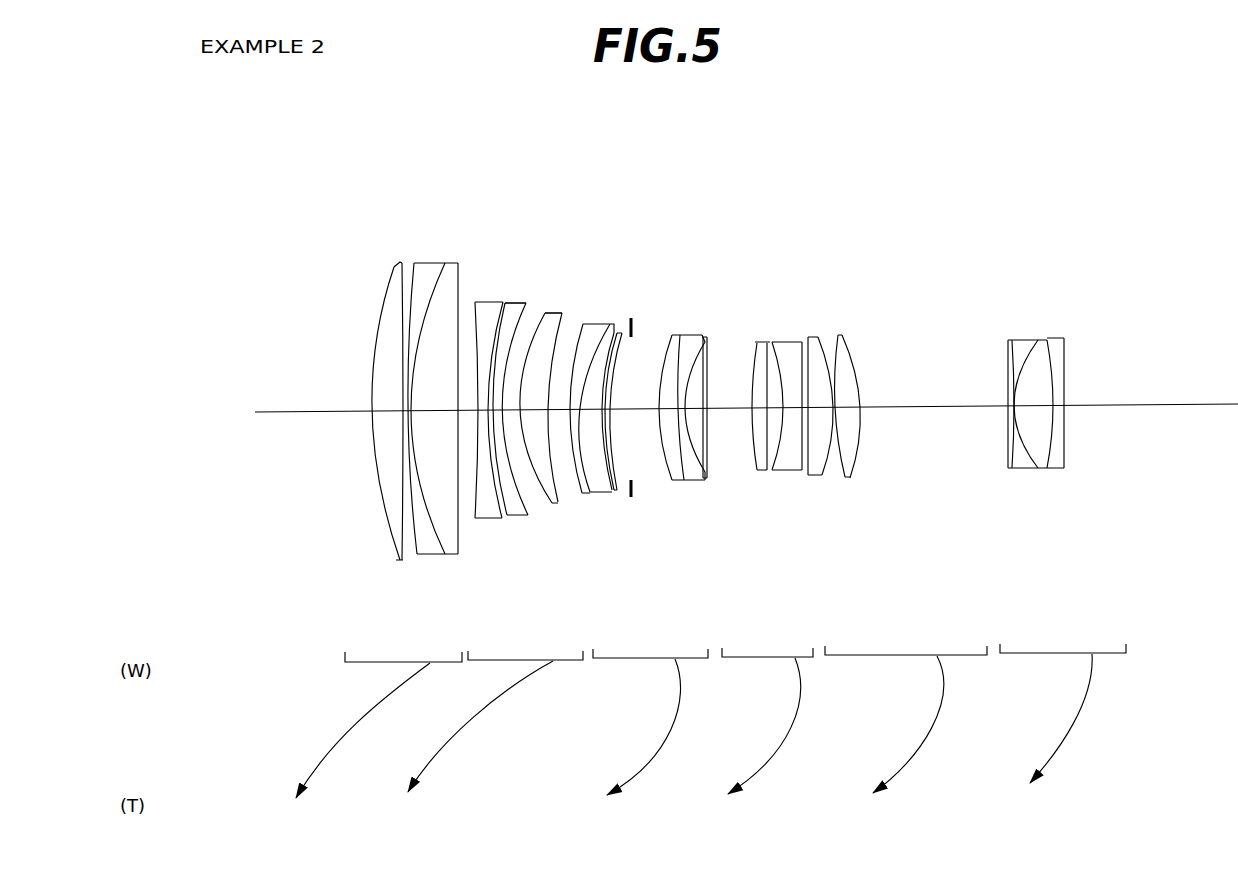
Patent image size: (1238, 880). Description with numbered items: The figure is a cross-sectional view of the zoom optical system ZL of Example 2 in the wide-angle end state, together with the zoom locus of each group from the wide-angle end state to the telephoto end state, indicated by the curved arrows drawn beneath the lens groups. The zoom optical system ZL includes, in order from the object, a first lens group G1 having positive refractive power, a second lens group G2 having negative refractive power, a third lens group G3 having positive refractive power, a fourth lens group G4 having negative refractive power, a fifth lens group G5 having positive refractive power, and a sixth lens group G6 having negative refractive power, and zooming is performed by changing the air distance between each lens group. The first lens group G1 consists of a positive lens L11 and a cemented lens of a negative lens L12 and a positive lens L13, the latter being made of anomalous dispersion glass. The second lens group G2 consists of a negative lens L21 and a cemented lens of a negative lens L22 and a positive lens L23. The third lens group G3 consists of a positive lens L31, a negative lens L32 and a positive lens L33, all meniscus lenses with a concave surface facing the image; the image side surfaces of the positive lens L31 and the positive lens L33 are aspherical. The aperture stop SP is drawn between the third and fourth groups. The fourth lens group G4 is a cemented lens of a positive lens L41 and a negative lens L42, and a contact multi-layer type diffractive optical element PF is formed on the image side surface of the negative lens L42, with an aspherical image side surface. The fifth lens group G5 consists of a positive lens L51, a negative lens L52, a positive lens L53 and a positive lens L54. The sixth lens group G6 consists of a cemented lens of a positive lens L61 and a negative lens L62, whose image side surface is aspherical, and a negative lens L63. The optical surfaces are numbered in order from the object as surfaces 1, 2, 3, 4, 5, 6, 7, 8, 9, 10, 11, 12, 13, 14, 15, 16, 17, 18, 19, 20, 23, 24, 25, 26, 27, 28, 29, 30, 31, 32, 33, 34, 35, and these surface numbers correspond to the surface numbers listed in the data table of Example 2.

The zoom optical system ZL is at (1078, 70).
The aperture stop SP is at (630, 497).
The diffractive optical element PF is at (726, 433).
The first lens group G1 is at (379, 478).
The second lens group G2 is at (499, 492).
The third lens group G3 is at (639, 514).
The fourth lens group G4 is at (736, 514).
The fifth lens group G5 is at (869, 529).
The sixth lens group G6 is at (1053, 529).
The positive lens L11 is at (399, 560).
The negative lens L12 is at (433, 554).
The positive lens L13 is at (457, 556).
The negative lens L21 is at (487, 518).
The negative lens L22 is at (518, 515).
The positive lens L23 is at (555, 503).
The positive lens L31 is at (588, 493).
The negative lens L32 is at (607, 490).
The positive lens L33 is at (630, 496).
The positive lens L41 is at (681, 481).
The negative lens L42 is at (714, 484).
The positive lens L51 is at (763, 473).
The negative lens L52 is at (786, 473).
The positive lens L53 is at (817, 478).
The positive lens L54 is at (848, 479).
The positive lens L61 is at (1018, 470).
The negative lens L62 is at (1038, 470).
The negative lens L63 is at (1055, 470).
The surface 1 is at (393, 285).
The surface 2 is at (405, 266).
The surface 3 is at (410, 265).
The surface 4 is at (422, 264).
The surface 5 is at (458, 262).
The surface 6 is at (471, 302).
The surface 7 is at (488, 302).
The surface 8 is at (502, 303).
The surface 9 is at (522, 303).
The surface 10 is at (529, 303).
The surface 11 is at (546, 313).
The surface 12 is at (562, 313).
The surface 13 is at (563, 318).
The surface 14 is at (583, 323).
The surface 15 is at (610, 323).
The surface 16 is at (616, 333).
The surface 17 is at (631, 318).
The surface 18 is at (670, 335).
The surface 19 is at (681, 335).
The surface 20 is at (703, 345).
The surface 23 is at (756, 343).
The surface 24 is at (767, 343).
The surface 25 is at (776, 342).
The surface 26 is at (803, 342).
The surface 27 is at (810, 337).
The surface 28 is at (819, 337).
The surface 29 is at (839, 335).
The surface 30 is at (848, 337).
The surface 31 is at (1008, 358).
The surface 32 is at (1012, 340).
The surface 33 is at (1050, 348).
The surface 34 is at (1048, 342).
The surface 35 is at (1066, 355).